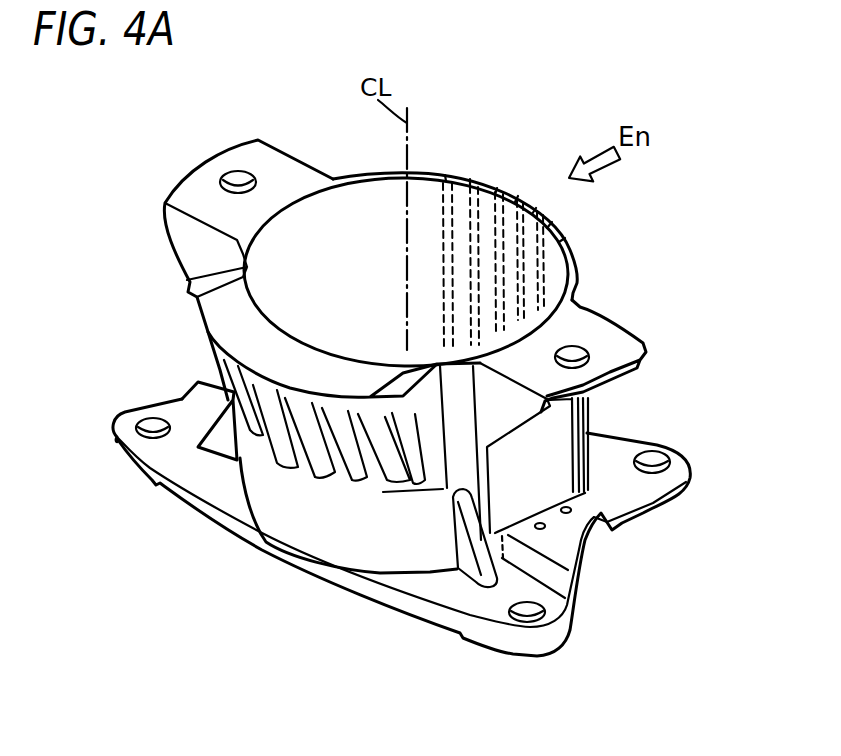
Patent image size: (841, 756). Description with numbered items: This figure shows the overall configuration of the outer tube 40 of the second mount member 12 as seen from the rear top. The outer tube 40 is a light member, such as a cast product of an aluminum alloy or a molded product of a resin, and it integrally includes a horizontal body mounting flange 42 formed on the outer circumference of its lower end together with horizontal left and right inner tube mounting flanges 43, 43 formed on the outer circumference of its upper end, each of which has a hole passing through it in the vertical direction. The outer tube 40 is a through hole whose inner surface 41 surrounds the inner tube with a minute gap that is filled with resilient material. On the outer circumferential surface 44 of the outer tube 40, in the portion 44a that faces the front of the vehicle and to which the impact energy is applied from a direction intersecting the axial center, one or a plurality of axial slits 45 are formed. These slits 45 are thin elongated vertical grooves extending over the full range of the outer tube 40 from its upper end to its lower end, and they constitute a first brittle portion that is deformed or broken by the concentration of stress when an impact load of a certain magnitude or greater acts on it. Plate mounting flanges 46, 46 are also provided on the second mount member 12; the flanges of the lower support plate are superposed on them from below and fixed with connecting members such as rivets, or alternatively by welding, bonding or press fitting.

The second mount member 12 is at (676, 296).
The outer tube 40 is at (287, 517).
The inner surface of the outer tube 41 is at (347, 234).
The body mounting flange 42 is at (205, 487).
The inner tube mounting flange 43 is at (205, 188).
The outer circumferential surface 44 is at (362, 536).
The portion facing the front of the vehicle 44a is at (517, 197).
The axial slit 45 is at (494, 189).
The plate mounting flange 46 is at (213, 377).